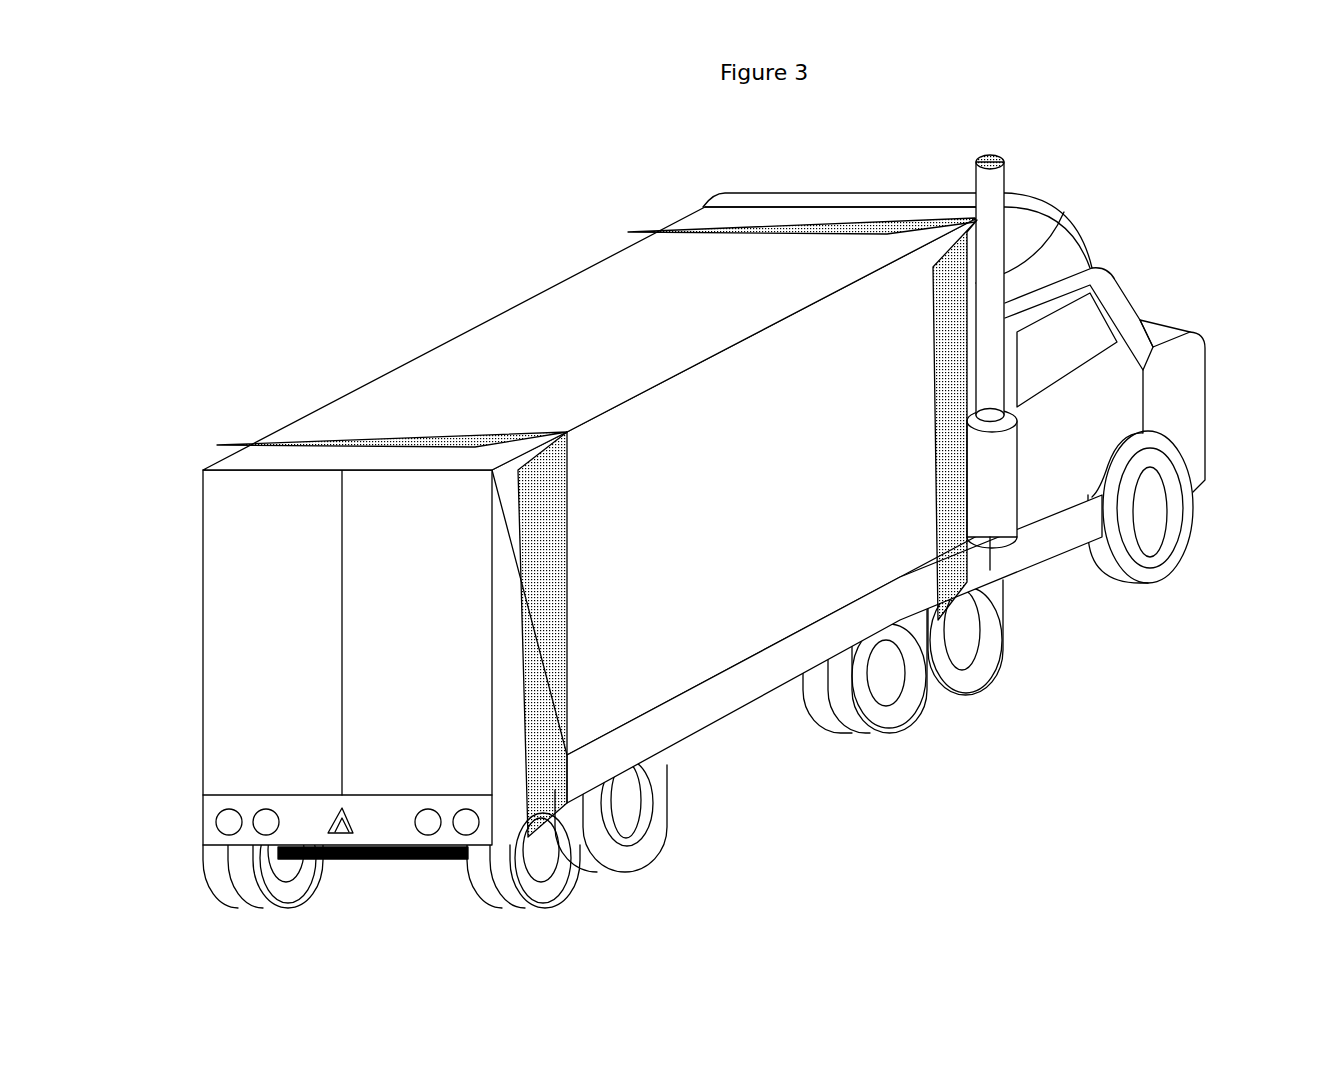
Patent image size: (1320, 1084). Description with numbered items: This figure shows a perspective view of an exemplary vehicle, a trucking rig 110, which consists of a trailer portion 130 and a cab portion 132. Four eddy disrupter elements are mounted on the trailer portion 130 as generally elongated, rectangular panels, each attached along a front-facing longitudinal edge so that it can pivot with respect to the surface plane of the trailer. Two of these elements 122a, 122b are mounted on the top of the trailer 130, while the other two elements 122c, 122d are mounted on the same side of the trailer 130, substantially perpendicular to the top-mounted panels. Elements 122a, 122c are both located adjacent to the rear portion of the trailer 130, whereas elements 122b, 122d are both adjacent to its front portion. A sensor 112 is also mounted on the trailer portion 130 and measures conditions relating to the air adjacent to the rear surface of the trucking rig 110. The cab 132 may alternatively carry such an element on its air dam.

The trucking rig 110 is at (398, 362).
The sensor 112 is at (334, 852).
The eddy disrupter element 122a is at (267, 438).
The eddy disrupter element 122b is at (667, 222).
The eddy disrupter element 122c is at (548, 662).
The eddy disrupter element 122d is at (950, 288).
The trailer portion 130 is at (628, 345).
The cab portion 132 is at (1190, 407).